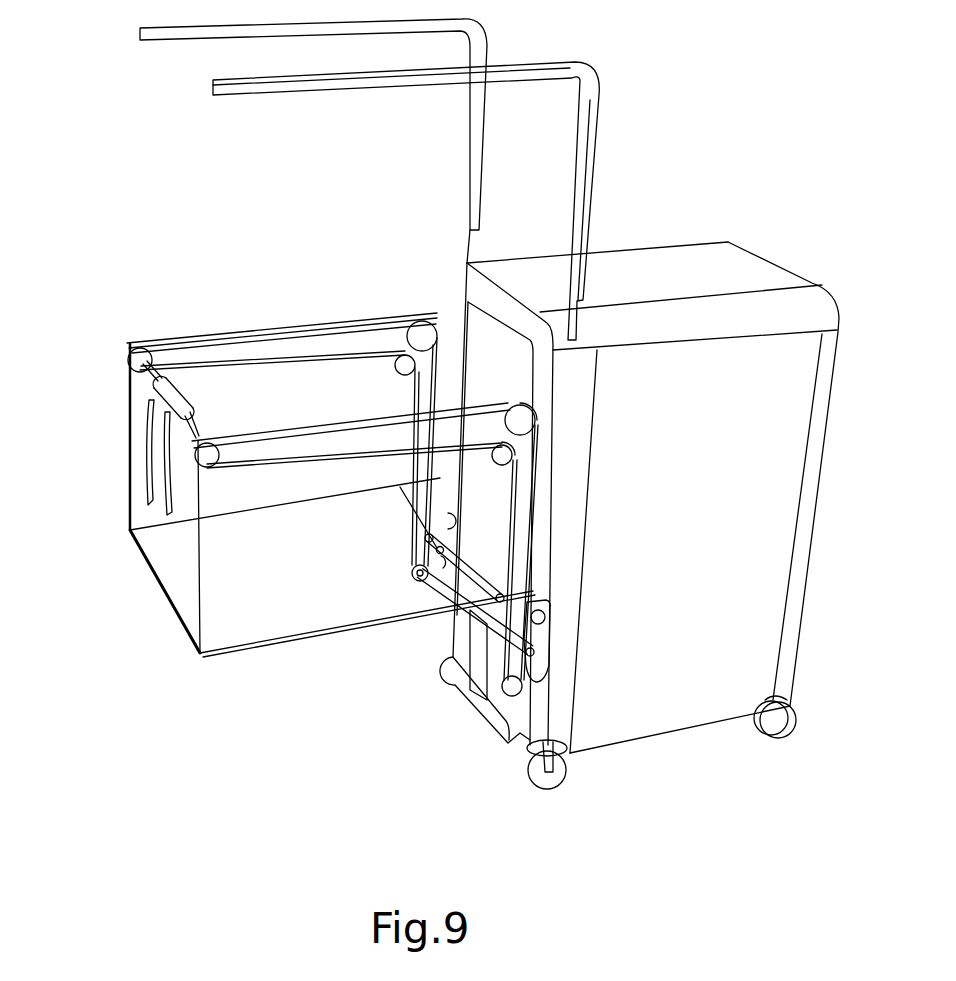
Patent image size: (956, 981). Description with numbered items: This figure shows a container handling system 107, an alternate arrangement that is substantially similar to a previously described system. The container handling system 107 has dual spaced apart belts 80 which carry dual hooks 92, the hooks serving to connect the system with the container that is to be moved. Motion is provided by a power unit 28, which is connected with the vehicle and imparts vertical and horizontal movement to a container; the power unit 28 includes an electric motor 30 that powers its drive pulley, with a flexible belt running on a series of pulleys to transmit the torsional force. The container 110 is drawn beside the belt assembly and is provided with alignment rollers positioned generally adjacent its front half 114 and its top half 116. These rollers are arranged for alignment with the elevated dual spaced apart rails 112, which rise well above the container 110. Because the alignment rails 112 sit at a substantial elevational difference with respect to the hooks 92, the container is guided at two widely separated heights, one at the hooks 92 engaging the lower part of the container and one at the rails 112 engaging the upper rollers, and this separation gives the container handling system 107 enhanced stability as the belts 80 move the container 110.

The container handling system 107 is at (110, 152).
The elevated dual spaced apart rails 112 is at (566, 70).
The container 110 is at (726, 315).
The top half 116 is at (686, 407).
The front half 114 is at (568, 392).
The dual spaced apart belts 80 is at (243, 333).
The power unit 28 is at (146, 396).
The electric motor 30 is at (178, 398).
The dual hooks 92 is at (545, 664).